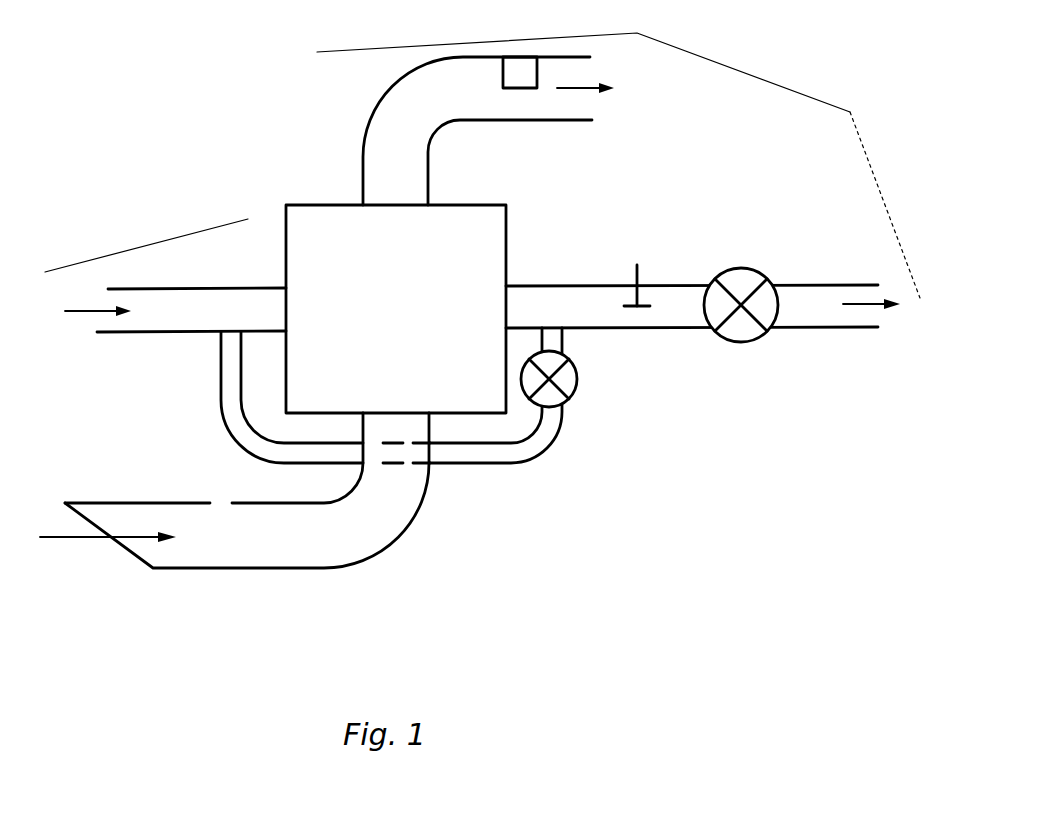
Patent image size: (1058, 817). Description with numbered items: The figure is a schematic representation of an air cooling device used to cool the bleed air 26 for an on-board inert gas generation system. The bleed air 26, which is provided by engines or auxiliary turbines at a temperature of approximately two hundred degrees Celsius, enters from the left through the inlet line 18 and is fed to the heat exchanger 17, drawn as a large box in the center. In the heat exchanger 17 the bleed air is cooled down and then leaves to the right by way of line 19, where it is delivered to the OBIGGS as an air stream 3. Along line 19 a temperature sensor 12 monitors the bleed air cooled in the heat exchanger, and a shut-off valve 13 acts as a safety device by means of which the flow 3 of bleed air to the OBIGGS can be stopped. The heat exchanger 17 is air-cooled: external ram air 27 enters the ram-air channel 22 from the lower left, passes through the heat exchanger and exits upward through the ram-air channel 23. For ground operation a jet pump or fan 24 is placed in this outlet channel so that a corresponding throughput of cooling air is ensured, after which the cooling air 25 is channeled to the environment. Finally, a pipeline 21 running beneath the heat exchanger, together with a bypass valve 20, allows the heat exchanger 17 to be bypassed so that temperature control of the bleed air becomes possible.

The air stream 3 is at (878, 307).
The temperature sensor 12 is at (640, 272).
The shut-off valve 13 is at (762, 296).
The heat exchanger 17 is at (462, 218).
The inlet line 18 is at (128, 300).
The line 19 is at (519, 292).
The bypass valve 20 is at (569, 387).
The pipeline 21 is at (220, 413).
The ram-air channel 22 is at (370, 530).
The ram-air channel 23 is at (405, 100).
The fan 24 is at (524, 72).
The cooling air 25 is at (575, 90).
The bleed air 26 is at (79, 312).
The ram air 27 is at (45, 537).